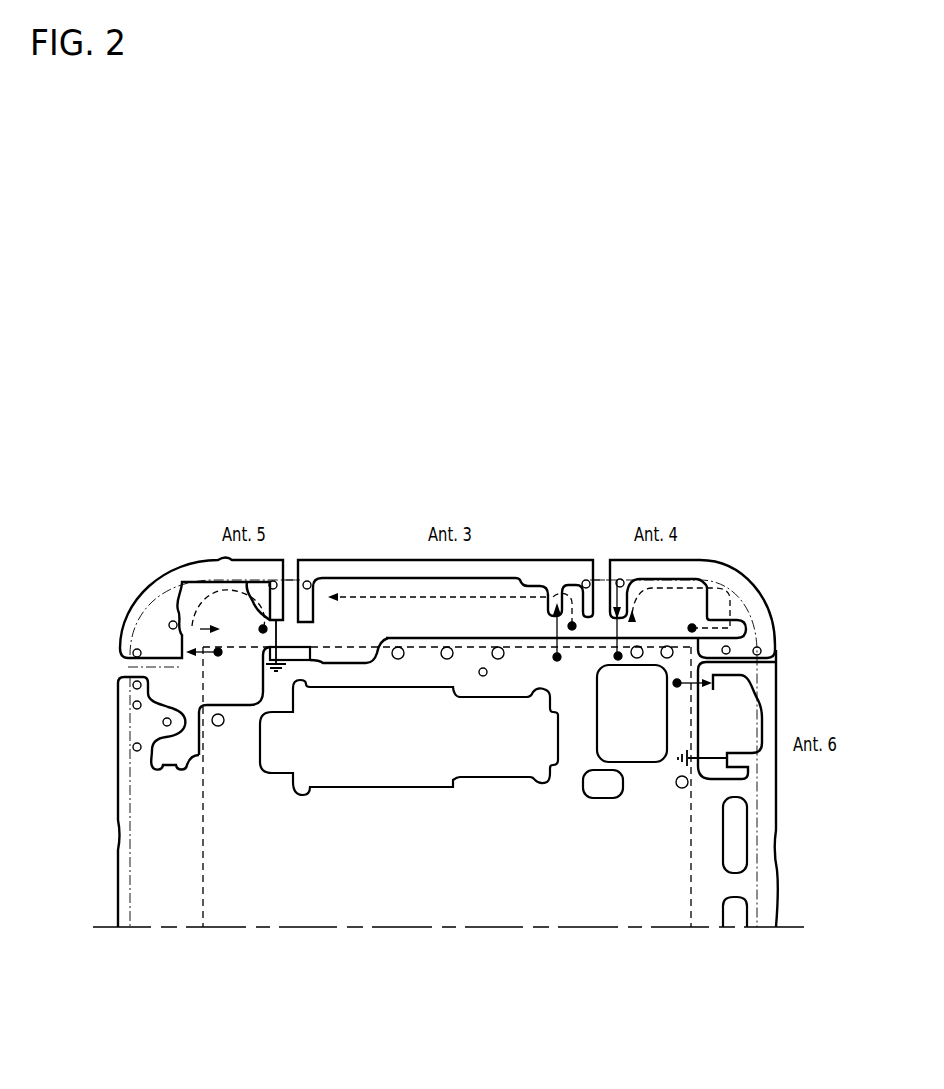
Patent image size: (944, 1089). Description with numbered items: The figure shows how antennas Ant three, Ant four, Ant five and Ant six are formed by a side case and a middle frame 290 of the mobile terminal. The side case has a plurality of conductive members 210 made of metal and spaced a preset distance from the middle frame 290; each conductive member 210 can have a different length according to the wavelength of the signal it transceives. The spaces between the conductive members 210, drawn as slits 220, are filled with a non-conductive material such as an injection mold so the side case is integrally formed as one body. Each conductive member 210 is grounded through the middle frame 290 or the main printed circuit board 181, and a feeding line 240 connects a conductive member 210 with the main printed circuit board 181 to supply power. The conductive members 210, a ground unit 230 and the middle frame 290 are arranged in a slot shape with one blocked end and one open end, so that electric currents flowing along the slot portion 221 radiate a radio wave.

The conductive member 210 is at (162, 582).
The slot portion 221 is at (218, 607).
The slit (dielectric slot) 220 is at (291, 574).
The ground unit 230 is at (275, 641).
The feeding line 240 is at (553, 622).
The main printed circuit board 181 is at (203, 812).
The middle frame 290 is at (707, 888).